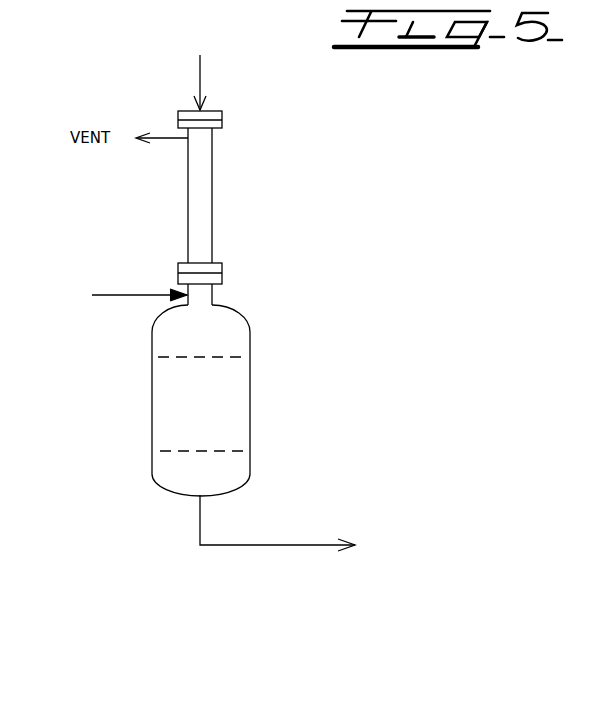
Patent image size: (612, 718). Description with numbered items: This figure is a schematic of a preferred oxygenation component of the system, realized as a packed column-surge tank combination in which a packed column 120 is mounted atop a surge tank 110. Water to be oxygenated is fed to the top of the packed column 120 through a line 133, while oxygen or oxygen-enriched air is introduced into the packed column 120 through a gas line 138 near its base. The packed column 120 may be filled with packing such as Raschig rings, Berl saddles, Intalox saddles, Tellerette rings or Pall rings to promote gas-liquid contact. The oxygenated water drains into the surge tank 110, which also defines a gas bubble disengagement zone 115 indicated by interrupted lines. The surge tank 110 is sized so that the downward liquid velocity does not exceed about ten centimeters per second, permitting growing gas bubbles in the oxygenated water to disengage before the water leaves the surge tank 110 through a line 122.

The surge tank 110 is at (152, 461).
The gas bubble disengagement zone 115 is at (237, 372).
The packed column 120 is at (213, 189).
The line 122 is at (262, 546).
The line 133 is at (200, 82).
The gas line 138 is at (120, 295).